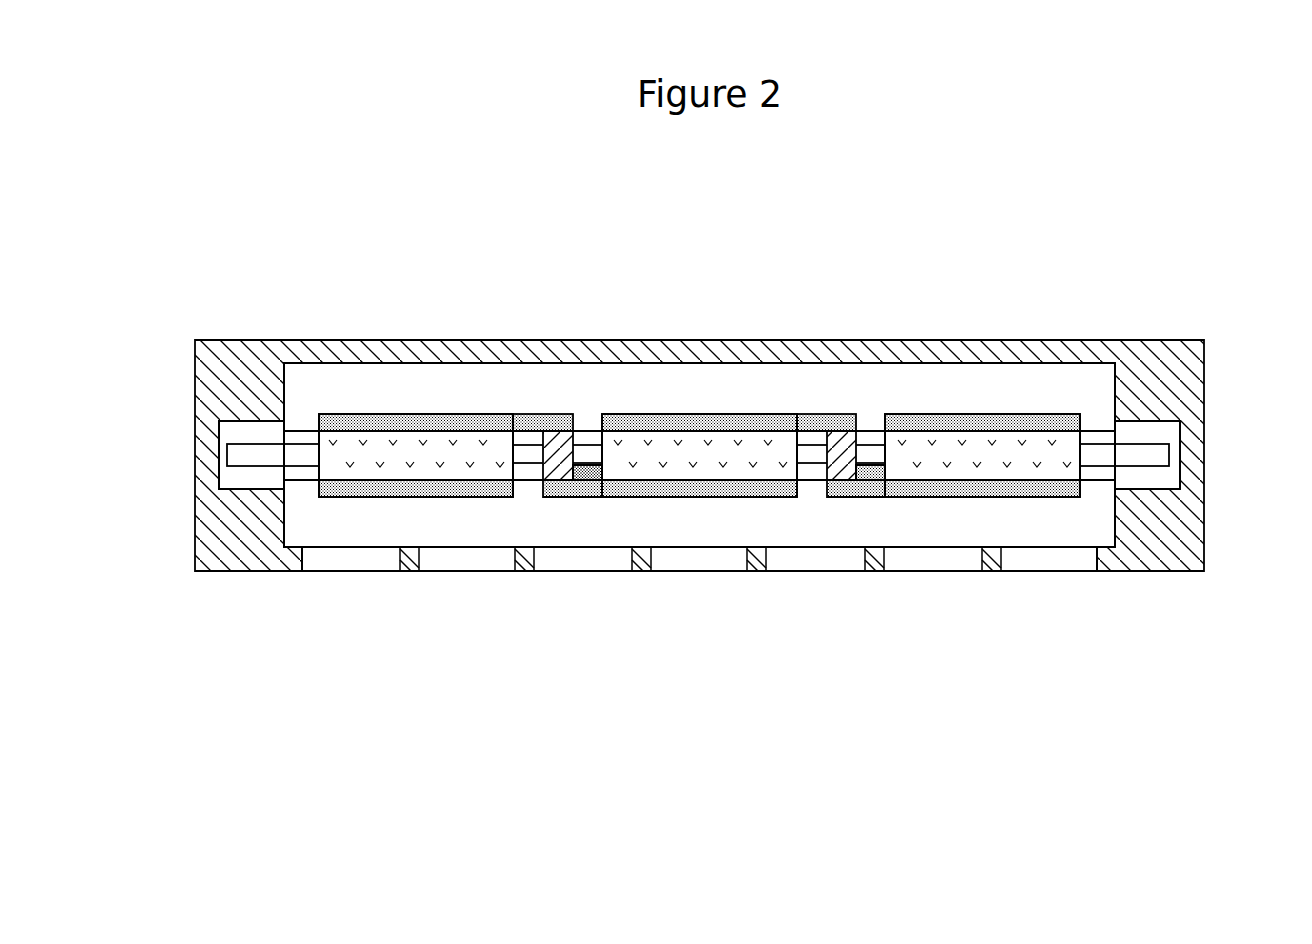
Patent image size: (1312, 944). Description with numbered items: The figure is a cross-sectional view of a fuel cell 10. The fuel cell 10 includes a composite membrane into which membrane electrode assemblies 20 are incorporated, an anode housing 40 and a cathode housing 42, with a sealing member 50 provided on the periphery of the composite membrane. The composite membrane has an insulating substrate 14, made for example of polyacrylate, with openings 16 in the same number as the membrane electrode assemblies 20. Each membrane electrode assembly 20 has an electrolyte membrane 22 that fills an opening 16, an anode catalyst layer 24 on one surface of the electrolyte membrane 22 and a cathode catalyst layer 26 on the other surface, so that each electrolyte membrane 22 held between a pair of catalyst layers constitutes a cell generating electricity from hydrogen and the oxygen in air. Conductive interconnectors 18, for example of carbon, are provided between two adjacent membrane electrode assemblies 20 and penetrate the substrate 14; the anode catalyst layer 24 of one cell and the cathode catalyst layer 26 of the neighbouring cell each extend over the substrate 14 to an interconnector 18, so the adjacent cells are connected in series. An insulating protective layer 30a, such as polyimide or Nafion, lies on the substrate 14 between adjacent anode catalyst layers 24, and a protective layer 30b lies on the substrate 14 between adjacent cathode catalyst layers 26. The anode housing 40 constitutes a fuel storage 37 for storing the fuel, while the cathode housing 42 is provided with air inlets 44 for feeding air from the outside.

The fuel cell 10 is at (660, 721).
The substrate 14 is at (283, 420).
The openings 16 is at (303, 440).
The interconnector 18 is at (553, 430).
The membrane electrode assembly 20 is at (427, 398).
The electrolyte membrane 22 is at (330, 447).
The anode catalyst layer 24 is at (395, 442).
The cathode catalyst layer 26 is at (407, 498).
The protective layer 30a is at (586, 428).
The protective layer 30b is at (527, 478).
The fuel storage 37 is at (1090, 388).
The anode housing 40 is at (1157, 340).
The cathode housing 42 is at (1157, 573).
The air inlets 44 is at (1045, 573).
The sealing member 50 is at (237, 432).